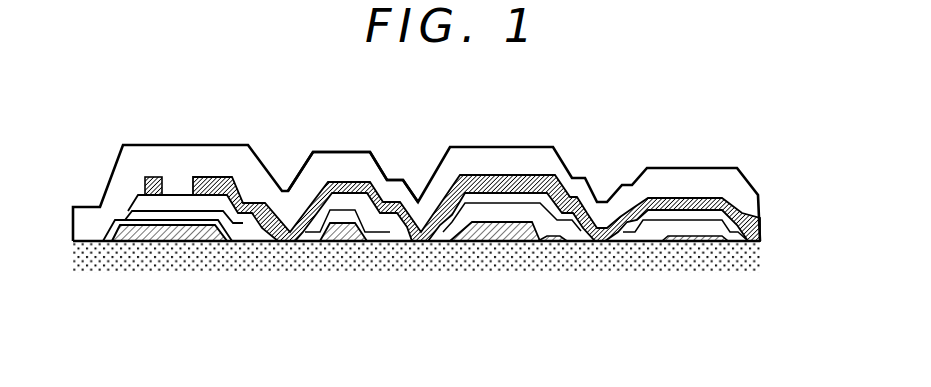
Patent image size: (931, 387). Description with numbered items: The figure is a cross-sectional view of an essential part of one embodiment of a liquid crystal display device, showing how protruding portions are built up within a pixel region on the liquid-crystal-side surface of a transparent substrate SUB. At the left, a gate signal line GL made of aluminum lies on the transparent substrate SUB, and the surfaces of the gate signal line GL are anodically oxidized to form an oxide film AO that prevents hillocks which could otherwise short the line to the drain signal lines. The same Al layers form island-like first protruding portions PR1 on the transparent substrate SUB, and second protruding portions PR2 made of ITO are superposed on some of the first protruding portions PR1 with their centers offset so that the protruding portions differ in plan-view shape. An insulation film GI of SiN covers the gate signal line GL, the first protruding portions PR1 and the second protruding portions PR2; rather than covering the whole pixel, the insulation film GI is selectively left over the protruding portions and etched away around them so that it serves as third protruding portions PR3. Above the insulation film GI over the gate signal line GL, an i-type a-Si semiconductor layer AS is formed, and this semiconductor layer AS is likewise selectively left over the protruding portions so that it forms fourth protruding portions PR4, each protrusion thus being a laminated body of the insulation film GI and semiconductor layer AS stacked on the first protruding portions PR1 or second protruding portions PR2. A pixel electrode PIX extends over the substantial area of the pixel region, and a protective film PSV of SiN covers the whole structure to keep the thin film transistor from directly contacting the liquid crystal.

The transparent substrate SUB is at (380, 258).
The oxide film AO is at (123, 225).
The protective film PSV is at (351, 162).
The gate signal line GL is at (177, 232).
The insulation film GI is at (170, 218).
The semiconductor layer AS is at (178, 198).
The pixel electrode PIX is at (223, 180).
The first protruding portion PR1 is at (340, 247).
The second protruding portion PR2 is at (560, 247).
The third protruding portion PR3 is at (487, 216).
The fourth protruding portion PR4 is at (531, 197).